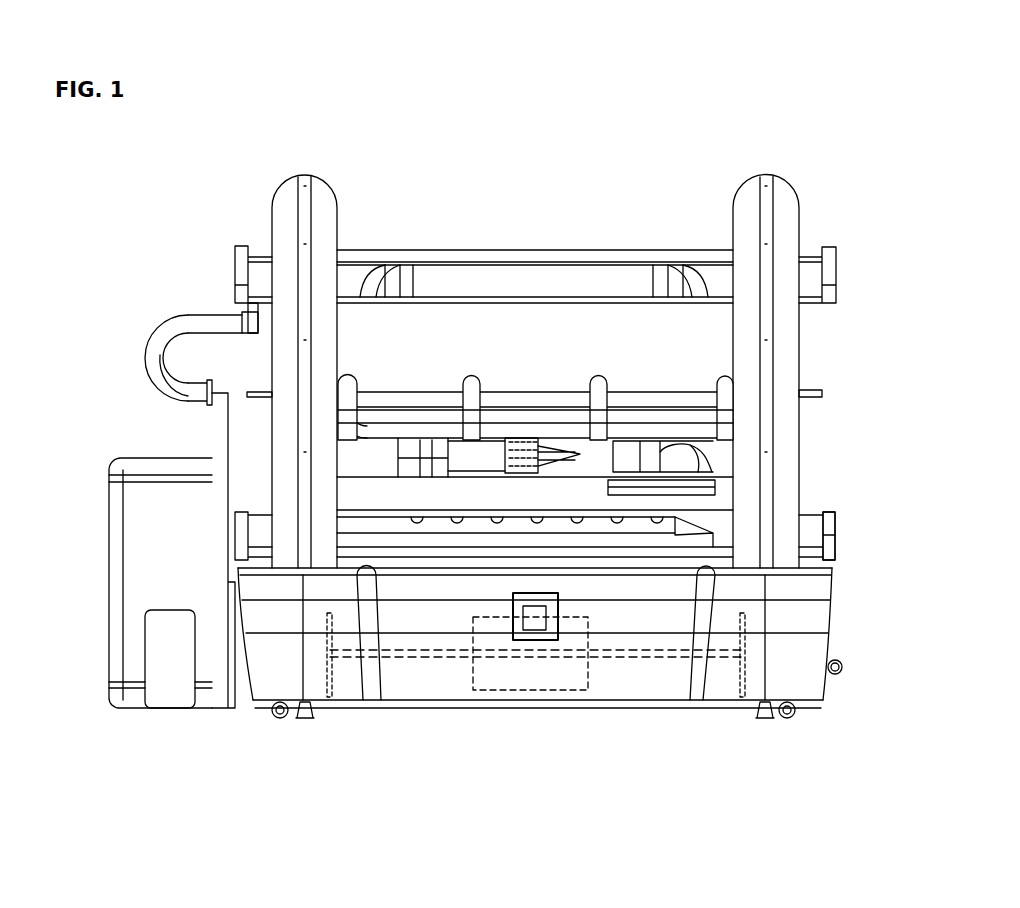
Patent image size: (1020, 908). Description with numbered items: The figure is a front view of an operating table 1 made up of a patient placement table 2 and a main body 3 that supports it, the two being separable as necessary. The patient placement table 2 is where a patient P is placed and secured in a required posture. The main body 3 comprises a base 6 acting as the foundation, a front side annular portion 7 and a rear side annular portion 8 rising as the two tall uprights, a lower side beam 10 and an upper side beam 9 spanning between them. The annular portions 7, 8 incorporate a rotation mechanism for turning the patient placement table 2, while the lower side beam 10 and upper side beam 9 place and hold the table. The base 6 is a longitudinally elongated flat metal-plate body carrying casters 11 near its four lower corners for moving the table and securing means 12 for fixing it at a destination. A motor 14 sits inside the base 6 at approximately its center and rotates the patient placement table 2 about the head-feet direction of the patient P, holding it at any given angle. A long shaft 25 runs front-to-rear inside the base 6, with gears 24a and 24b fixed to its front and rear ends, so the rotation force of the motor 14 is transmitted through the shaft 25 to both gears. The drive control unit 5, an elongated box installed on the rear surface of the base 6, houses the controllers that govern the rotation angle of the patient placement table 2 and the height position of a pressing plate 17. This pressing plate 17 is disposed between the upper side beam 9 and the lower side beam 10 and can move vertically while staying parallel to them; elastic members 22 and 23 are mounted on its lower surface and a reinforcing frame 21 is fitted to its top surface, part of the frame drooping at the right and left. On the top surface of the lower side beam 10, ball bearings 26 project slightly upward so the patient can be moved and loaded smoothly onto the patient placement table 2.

The operating table 1 is at (588, 122).
The patient placement table 2 is at (358, 490).
The main body 3 is at (832, 620).
The drive control unit 5 is at (120, 584).
The base 6 is at (800, 618).
The front side annular portion 7 is at (783, 180).
The rear side annular portion 8 is at (323, 179).
The upper side beam 9 is at (475, 250).
The lower side beam 10 is at (808, 533).
The caster 11 is at (790, 718).
The securing means 12 is at (305, 718).
The motor 14 is at (497, 700).
The pressing plate 17 is at (808, 392).
The reinforcing frame 21 is at (503, 432).
The elastic member 22 is at (652, 440).
The elastic member 23 is at (418, 412).
The gear 24a is at (742, 700).
The gear 24b is at (333, 700).
The shaft 25 is at (612, 657).
The ball bearing 26 is at (420, 518).
The patient P is at (665, 462).